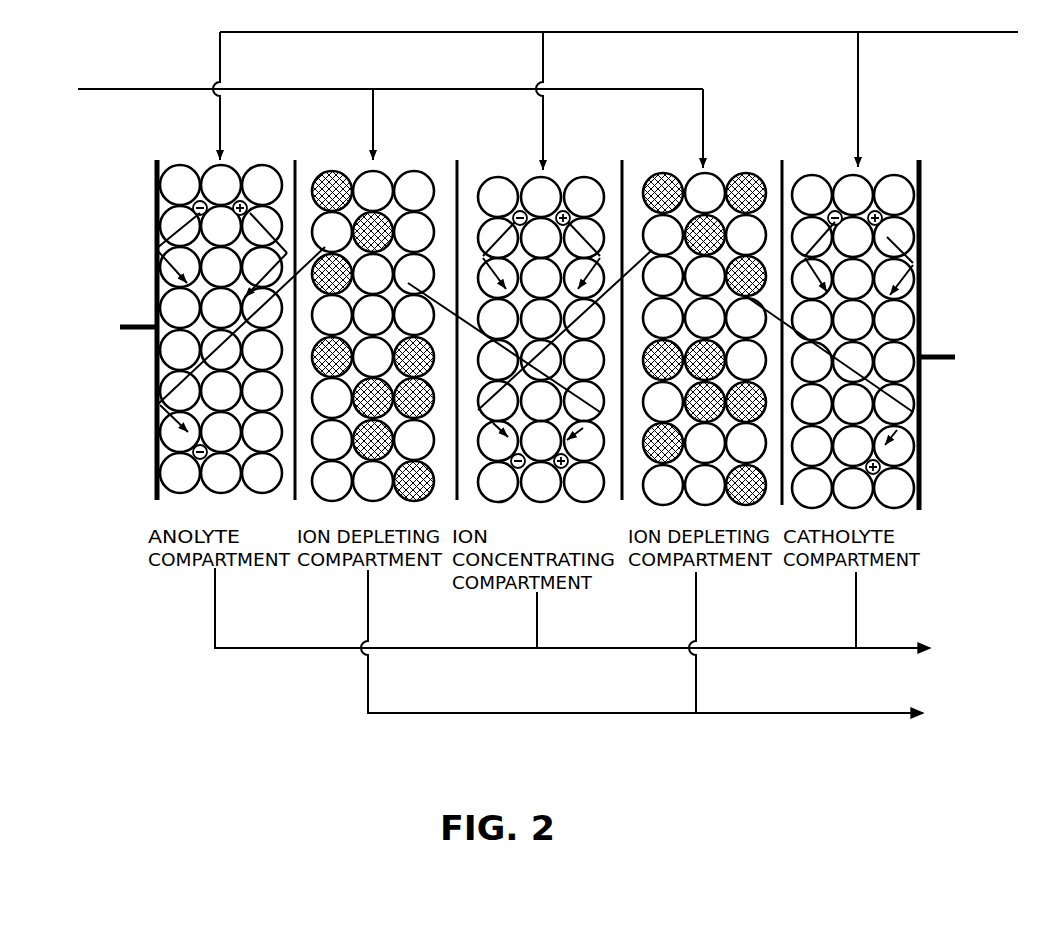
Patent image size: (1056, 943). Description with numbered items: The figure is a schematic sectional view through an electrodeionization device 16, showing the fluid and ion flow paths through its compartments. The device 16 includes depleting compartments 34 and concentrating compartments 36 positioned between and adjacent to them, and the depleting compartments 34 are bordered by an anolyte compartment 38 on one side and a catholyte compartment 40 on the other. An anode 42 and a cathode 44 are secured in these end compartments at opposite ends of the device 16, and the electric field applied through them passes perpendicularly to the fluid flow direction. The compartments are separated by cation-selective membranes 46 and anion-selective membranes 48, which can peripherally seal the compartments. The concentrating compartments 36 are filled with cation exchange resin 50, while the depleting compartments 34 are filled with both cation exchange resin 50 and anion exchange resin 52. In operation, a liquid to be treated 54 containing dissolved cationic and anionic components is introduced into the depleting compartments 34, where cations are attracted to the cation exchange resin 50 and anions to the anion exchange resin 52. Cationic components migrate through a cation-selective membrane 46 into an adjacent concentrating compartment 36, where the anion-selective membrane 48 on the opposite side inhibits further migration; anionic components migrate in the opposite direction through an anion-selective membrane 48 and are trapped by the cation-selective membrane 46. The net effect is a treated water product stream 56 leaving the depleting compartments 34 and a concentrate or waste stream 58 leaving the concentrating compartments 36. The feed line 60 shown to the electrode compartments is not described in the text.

The electrodeionization device 16 is at (138, 232).
The depleting compartment 34 is at (610, 317).
The concentrating compartment 36 is at (560, 165).
The anolyte compartment 38 is at (246, 158).
The catholyte compartment 40 is at (893, 160).
The anode 42 is at (141, 333).
The cathode 44 is at (944, 362).
The cation-selective membrane 46 is at (453, 500).
The anion-selective membrane 48 is at (288, 502).
The cation exchange resin 50 is at (332, 500).
The anion exchange resin 52 is at (341, 169).
The liquid to be treated 54 is at (293, 89).
The treated water product stream 56 is at (590, 709).
The concentrate or waste stream 58 is at (582, 650).
The electrolyte feed line 60 is at (674, 32).